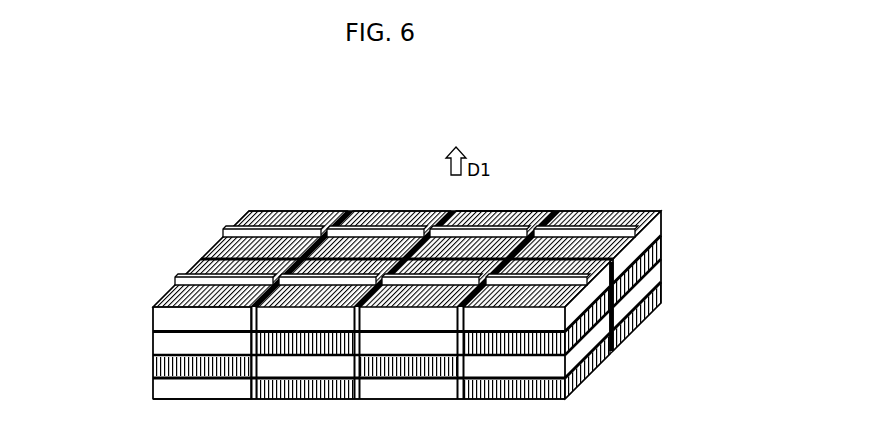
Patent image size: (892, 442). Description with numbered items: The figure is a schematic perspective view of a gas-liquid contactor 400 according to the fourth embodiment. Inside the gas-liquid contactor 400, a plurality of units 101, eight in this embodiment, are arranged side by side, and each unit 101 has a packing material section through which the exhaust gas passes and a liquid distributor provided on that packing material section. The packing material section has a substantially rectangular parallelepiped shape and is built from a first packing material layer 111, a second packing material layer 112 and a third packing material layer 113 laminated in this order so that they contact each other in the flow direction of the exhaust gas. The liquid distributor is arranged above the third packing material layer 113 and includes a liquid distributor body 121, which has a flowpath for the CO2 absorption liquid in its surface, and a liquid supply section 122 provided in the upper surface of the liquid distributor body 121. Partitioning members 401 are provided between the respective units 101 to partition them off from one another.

The gas-liquid contactor 400 is at (137, 156).
The unit 101 is at (130, 230).
The liquid supply section 122 is at (183, 278).
The liquid distributor body 121 is at (152, 318).
The third packing material layer 113 is at (152, 344).
The second packing material layer 112 is at (152, 368).
The first packing material layer 111 is at (152, 391).
The partitioning member 401 is at (458, 211).